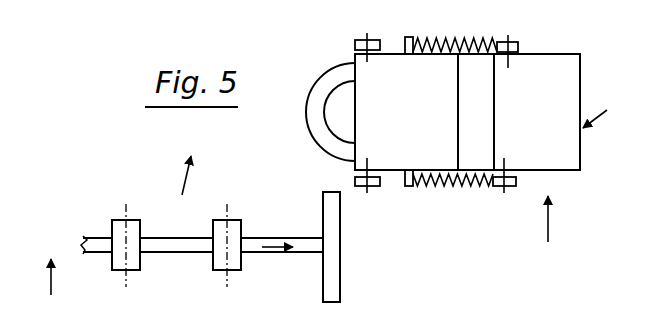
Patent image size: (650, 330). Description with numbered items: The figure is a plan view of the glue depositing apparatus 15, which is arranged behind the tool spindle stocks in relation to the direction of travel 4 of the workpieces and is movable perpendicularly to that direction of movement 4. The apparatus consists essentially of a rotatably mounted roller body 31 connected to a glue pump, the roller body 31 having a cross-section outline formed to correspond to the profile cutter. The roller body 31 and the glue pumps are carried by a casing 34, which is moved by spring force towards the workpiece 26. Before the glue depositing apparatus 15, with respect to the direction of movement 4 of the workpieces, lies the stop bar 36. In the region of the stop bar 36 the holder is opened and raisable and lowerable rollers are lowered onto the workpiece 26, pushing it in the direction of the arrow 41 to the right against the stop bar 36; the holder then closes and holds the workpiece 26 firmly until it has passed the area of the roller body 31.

The direction of travel 4 is at (117, 236).
The glue depositing apparatus 15 is at (577, 177).
The workpiece 26 is at (177, 248).
The roller body 31 is at (327, 63).
The casing 34 is at (573, 59).
The stop bar 36 is at (333, 278).
The arrow 41 is at (276, 249).